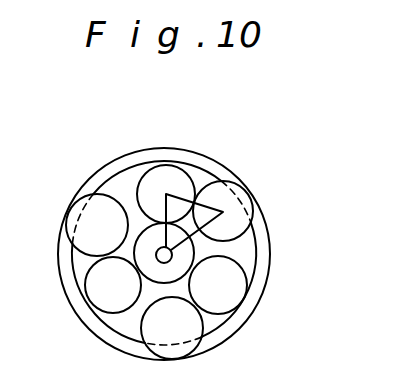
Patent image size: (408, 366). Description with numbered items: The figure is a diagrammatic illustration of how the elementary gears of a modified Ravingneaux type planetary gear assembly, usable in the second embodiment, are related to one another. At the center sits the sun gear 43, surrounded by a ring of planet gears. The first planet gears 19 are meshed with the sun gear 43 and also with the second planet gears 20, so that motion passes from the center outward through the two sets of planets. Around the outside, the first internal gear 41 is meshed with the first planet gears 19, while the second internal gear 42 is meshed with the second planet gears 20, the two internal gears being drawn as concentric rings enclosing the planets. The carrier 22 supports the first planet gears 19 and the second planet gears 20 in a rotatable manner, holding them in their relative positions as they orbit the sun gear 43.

The first planet gears 19 is at (142, 186).
The first internal gear 41 is at (197, 170).
The second planet gears 20 is at (207, 181).
The second internal gear 42 is at (232, 174).
The carrier 22 is at (250, 234).
The sun gear 43 is at (194, 252).